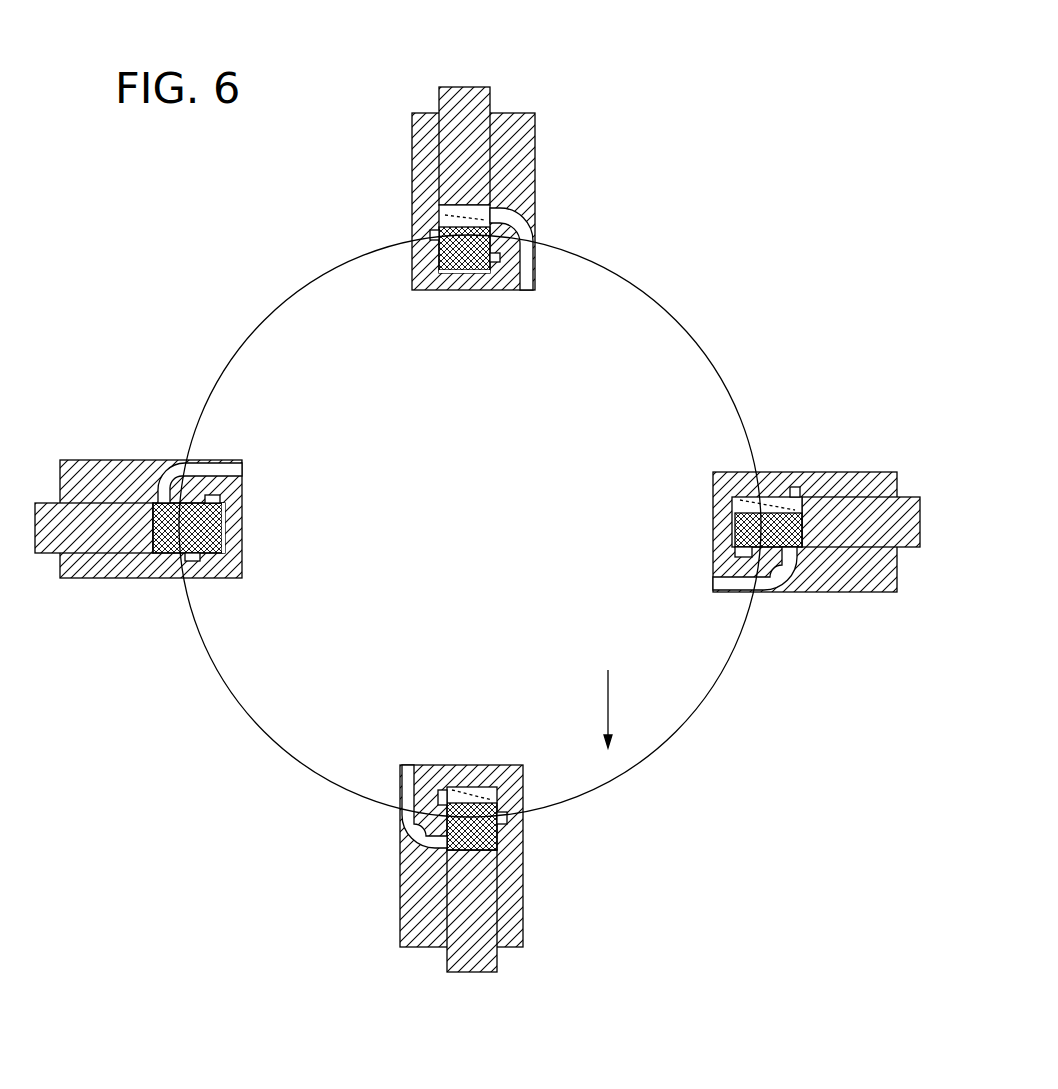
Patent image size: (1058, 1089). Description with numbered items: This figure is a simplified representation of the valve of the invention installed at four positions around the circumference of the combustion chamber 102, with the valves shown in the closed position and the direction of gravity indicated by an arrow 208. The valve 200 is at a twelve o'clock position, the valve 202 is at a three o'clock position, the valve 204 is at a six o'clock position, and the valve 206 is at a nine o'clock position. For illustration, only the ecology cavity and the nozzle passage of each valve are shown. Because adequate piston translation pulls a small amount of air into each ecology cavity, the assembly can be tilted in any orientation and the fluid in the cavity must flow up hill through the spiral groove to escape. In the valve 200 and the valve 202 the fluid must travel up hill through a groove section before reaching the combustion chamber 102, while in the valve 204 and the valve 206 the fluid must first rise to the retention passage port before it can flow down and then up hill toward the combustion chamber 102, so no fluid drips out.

The combustion chamber 102 is at (600, 795).
The valve 200 is at (537, 175).
The valve 202 is at (868, 595).
The valve 204 is at (410, 885).
The valve 206 is at (118, 470).
The arrow 208 is at (606, 682).